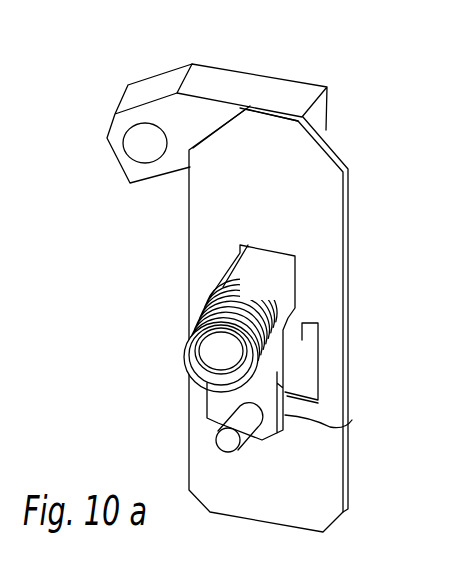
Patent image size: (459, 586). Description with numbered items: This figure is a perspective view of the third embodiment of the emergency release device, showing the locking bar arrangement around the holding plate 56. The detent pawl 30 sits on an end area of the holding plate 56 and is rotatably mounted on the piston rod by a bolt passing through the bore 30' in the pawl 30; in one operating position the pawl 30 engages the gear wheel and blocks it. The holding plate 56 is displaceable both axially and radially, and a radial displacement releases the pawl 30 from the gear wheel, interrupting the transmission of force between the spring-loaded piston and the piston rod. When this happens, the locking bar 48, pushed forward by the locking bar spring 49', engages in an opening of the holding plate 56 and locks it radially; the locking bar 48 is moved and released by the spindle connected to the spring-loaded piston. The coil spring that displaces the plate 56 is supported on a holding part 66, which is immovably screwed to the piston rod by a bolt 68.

The detent pawl 30 is at (252, 73).
The bore 30' is at (147, 99).
The holding plate 56 is at (325, 197).
The locking bar 48 is at (278, 298).
The locking bar spring 49' is at (185, 335).
The holding part 66 is at (352, 420).
The bolt 68 is at (220, 441).